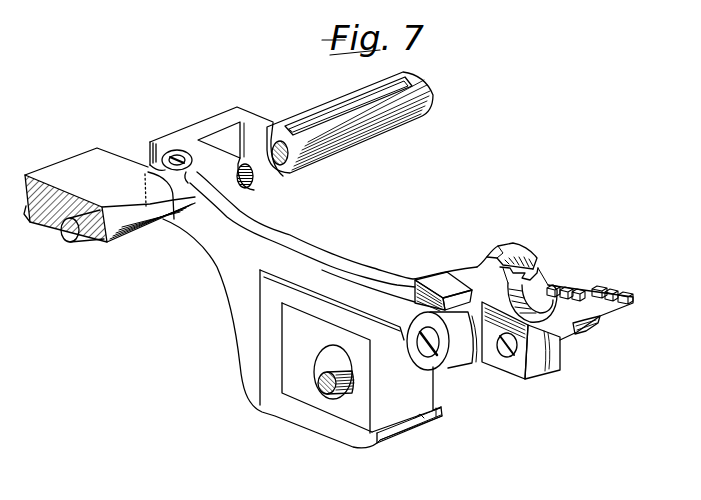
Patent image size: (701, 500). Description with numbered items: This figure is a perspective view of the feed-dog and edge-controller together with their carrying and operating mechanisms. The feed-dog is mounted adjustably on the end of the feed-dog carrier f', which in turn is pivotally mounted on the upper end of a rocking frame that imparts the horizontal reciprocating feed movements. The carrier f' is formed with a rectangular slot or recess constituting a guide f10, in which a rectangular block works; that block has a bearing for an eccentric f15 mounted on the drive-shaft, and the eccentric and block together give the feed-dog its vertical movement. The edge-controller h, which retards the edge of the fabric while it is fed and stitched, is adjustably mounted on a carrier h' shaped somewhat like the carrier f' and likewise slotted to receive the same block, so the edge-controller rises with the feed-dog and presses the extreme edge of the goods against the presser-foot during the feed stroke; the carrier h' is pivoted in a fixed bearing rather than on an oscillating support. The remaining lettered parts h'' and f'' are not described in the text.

The edge-controller h is at (328, 244).
The carrier h' is at (313, 204).
The bottom lip of lever bracket h'' is at (409, 444).
The feed-dog carrier f' is at (350, 161).
The frame bracket f'' is at (361, 333).
The guide f10 is at (442, 427).
The eccentric f15 is at (312, 348).